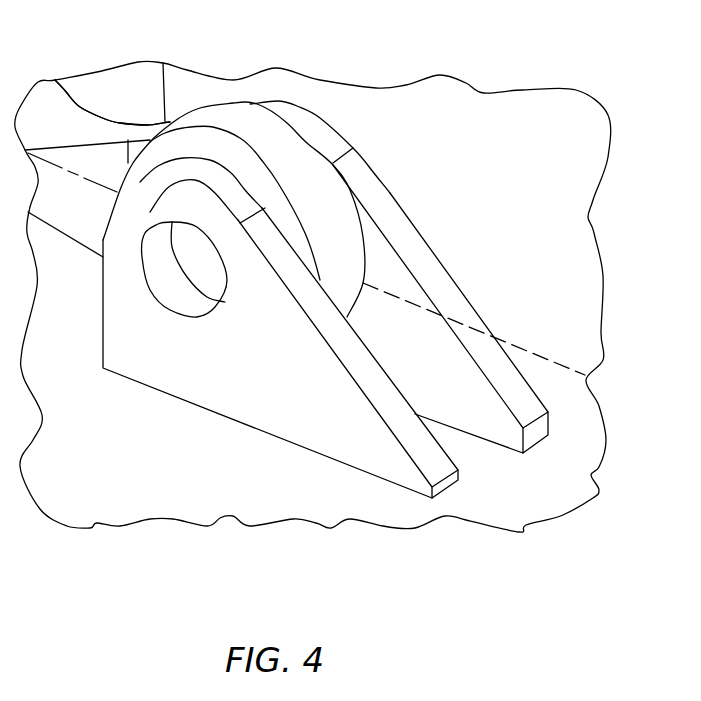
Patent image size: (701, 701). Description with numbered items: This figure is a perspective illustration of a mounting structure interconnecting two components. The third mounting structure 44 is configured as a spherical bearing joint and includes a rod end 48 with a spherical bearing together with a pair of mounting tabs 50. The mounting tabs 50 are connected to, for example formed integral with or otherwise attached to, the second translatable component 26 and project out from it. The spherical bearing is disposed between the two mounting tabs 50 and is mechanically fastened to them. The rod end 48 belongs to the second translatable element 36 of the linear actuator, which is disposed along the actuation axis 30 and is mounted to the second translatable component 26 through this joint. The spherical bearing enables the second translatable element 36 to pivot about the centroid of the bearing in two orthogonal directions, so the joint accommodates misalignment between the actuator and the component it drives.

The second translatable component 26 is at (266, 509).
The actuation axis 30 is at (543, 358).
The second translatable element 36 is at (92, 125).
The rod end 48 is at (112, 94).
The third mounting structure 44 is at (80, 295).
The mounting tabs 50 is at (452, 300).